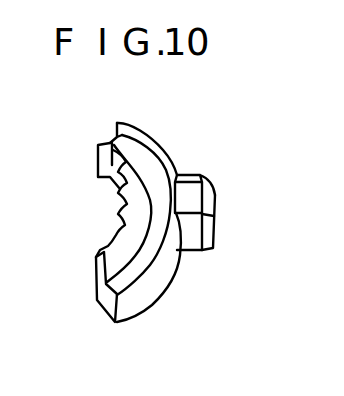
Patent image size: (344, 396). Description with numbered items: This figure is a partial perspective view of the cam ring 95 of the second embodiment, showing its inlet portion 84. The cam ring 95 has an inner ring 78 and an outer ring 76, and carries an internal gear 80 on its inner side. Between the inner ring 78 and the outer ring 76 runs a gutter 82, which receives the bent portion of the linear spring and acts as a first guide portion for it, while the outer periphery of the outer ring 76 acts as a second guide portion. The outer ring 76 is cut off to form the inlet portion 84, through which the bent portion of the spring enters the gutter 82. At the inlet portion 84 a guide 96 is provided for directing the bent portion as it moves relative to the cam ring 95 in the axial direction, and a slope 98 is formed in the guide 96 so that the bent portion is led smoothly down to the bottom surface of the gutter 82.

The outer ring 76 is at (171, 161).
The inner ring 78 is at (133, 175).
The internal gear 80 is at (118, 185).
The gutter 82 is at (116, 135).
The inlet portion 84 is at (193, 189).
The cam ring 95 is at (160, 302).
The guide 96 is at (216, 230).
The slope 98 is at (192, 237).